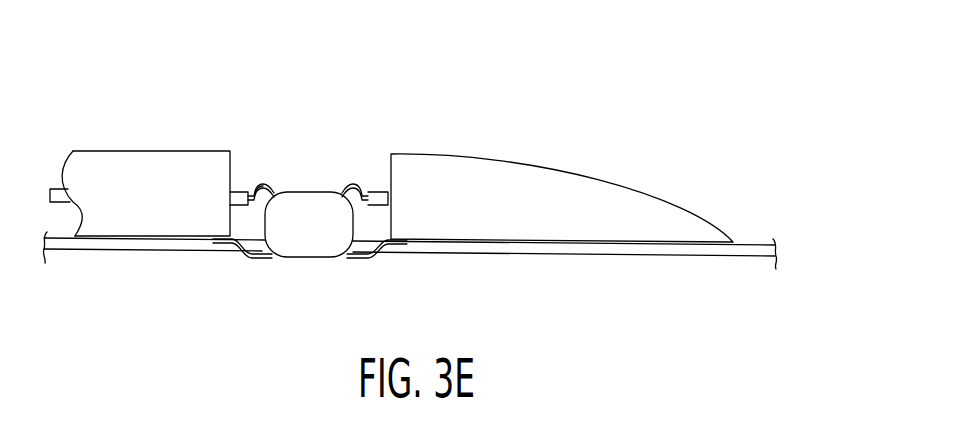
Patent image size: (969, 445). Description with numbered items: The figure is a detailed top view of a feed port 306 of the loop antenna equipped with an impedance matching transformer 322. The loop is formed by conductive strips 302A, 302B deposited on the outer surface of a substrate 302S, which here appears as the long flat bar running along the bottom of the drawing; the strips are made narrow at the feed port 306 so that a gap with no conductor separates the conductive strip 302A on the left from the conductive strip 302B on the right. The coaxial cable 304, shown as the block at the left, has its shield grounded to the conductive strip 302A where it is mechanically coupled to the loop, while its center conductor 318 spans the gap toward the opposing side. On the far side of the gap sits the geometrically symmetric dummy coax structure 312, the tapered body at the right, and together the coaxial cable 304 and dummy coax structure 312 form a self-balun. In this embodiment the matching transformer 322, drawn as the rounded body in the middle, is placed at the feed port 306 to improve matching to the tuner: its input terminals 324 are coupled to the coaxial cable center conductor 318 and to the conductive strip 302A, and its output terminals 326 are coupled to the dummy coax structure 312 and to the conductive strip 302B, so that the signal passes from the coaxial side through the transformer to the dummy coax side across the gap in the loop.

The coaxial cable 304 is at (97, 150).
The feed port 306 is at (341, 201).
The center conductor 318 is at (240, 190).
The input terminals 324 is at (264, 182).
The output terminals 326 is at (356, 178).
The dummy coax structure 312 is at (660, 217).
The impedance matching transformer 322 is at (293, 258).
The conductive strip 302A is at (61, 243).
The conductive strip 302B is at (608, 247).
The substrate 302S is at (411, 253).